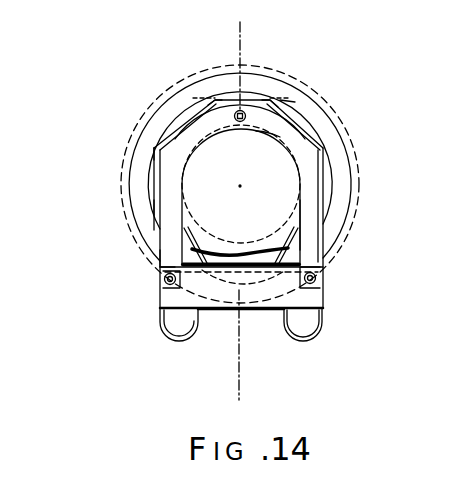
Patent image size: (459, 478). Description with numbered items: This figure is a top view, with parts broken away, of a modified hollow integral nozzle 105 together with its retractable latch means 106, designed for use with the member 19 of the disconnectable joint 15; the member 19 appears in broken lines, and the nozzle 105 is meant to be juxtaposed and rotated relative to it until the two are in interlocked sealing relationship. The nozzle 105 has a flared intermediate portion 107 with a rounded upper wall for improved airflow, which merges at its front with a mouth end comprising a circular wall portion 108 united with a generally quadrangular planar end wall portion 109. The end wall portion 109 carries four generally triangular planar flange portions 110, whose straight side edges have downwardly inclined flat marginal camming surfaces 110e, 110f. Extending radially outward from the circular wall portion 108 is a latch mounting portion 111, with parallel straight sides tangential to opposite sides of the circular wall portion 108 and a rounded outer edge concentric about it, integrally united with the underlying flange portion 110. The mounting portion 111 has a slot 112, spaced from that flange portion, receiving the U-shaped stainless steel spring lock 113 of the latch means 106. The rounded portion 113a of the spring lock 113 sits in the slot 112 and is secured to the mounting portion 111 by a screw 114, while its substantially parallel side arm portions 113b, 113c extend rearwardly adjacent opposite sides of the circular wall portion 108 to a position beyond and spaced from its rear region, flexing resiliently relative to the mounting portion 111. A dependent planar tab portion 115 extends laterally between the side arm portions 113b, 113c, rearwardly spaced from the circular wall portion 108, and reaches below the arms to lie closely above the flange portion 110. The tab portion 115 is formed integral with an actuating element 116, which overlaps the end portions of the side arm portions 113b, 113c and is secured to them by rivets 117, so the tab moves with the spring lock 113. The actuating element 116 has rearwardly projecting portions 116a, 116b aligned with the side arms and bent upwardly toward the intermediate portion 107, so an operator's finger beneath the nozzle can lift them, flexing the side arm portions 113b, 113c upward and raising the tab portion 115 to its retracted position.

The disconnectable joint 15 is at (216, 45).
The member 19 is at (127, 189).
The hollow integral nozzle 105 is at (144, 269).
The retractable latch means 106 is at (332, 322).
The flared intermediate portion 107 is at (292, 242).
The circular wall portion 108 is at (187, 230).
The planar end wall portion 109 is at (312, 218).
The flange portions 110 is at (248, 99).
The camming surface 110e is at (269, 99).
The camming surface 110f is at (215, 99).
The latch mounting portion 111 is at (291, 103).
The slot 112 is at (310, 126).
The spring lock 113 is at (319, 156).
The rounded portion 113a is at (267, 135).
The side arm portion 113b is at (308, 223).
The side arm portion 113c is at (168, 190).
The screw 114 is at (235, 114).
The dependent planar tab portion 115 is at (293, 296).
The actuating element 116 is at (233, 282).
The rearwardly projecting portion 116a is at (303, 338).
The rearwardly projecting portion 116b is at (178, 330).
The rivets 117 is at (317, 279).